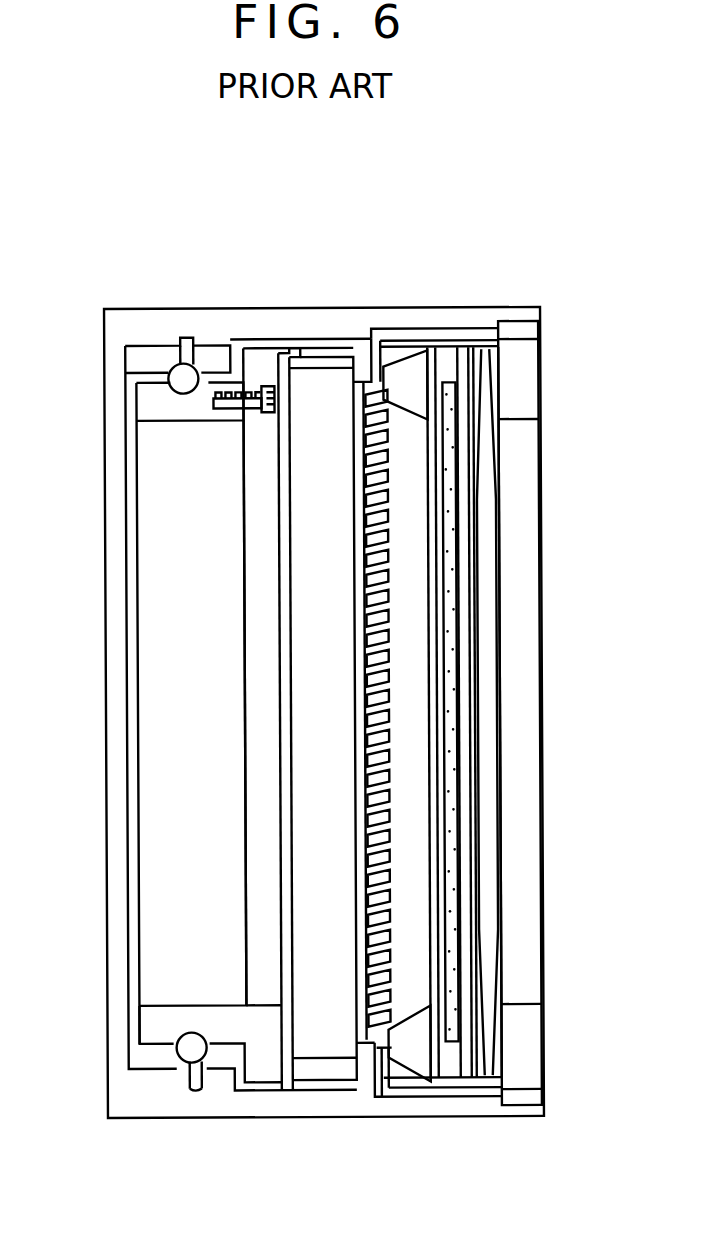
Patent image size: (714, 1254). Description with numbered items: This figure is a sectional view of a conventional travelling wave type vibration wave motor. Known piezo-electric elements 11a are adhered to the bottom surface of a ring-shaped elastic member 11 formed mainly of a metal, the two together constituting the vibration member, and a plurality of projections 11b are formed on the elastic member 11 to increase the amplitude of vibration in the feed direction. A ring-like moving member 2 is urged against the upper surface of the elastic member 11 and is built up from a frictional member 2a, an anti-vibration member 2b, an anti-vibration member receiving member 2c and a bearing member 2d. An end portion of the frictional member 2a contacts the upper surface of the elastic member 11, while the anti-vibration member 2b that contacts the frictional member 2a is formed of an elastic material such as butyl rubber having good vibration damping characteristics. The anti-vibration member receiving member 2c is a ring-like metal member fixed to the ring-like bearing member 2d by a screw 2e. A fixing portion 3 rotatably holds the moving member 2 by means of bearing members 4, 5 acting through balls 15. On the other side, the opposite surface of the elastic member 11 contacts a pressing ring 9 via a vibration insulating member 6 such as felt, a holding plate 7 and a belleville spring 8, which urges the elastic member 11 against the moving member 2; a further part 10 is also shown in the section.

The moving member 2 is at (333, 296).
The frictional member 2a is at (338, 355).
The anti-vibration member 2b is at (283, 355).
The anti-vibration member receiving member 2c is at (255, 355).
The bearing member 2d is at (142, 400).
The screw 2e is at (215, 410).
The fixing portion 3 is at (217, 316).
The bearing member 4 is at (153, 355).
The bearing member 5 is at (208, 355).
The vibration insulating member 6 is at (429, 420).
The holding plate 7 is at (478, 345).
The belleville spring 8 is at (497, 430).
The pressing ring 9 is at (530, 362).
The post 10 is at (372, 1062).
The elastic member 11 is at (413, 360).
The piezo-electric elements 11a is at (447, 352).
The projections 11b is at (390, 690).
The balls 15 is at (188, 1092).